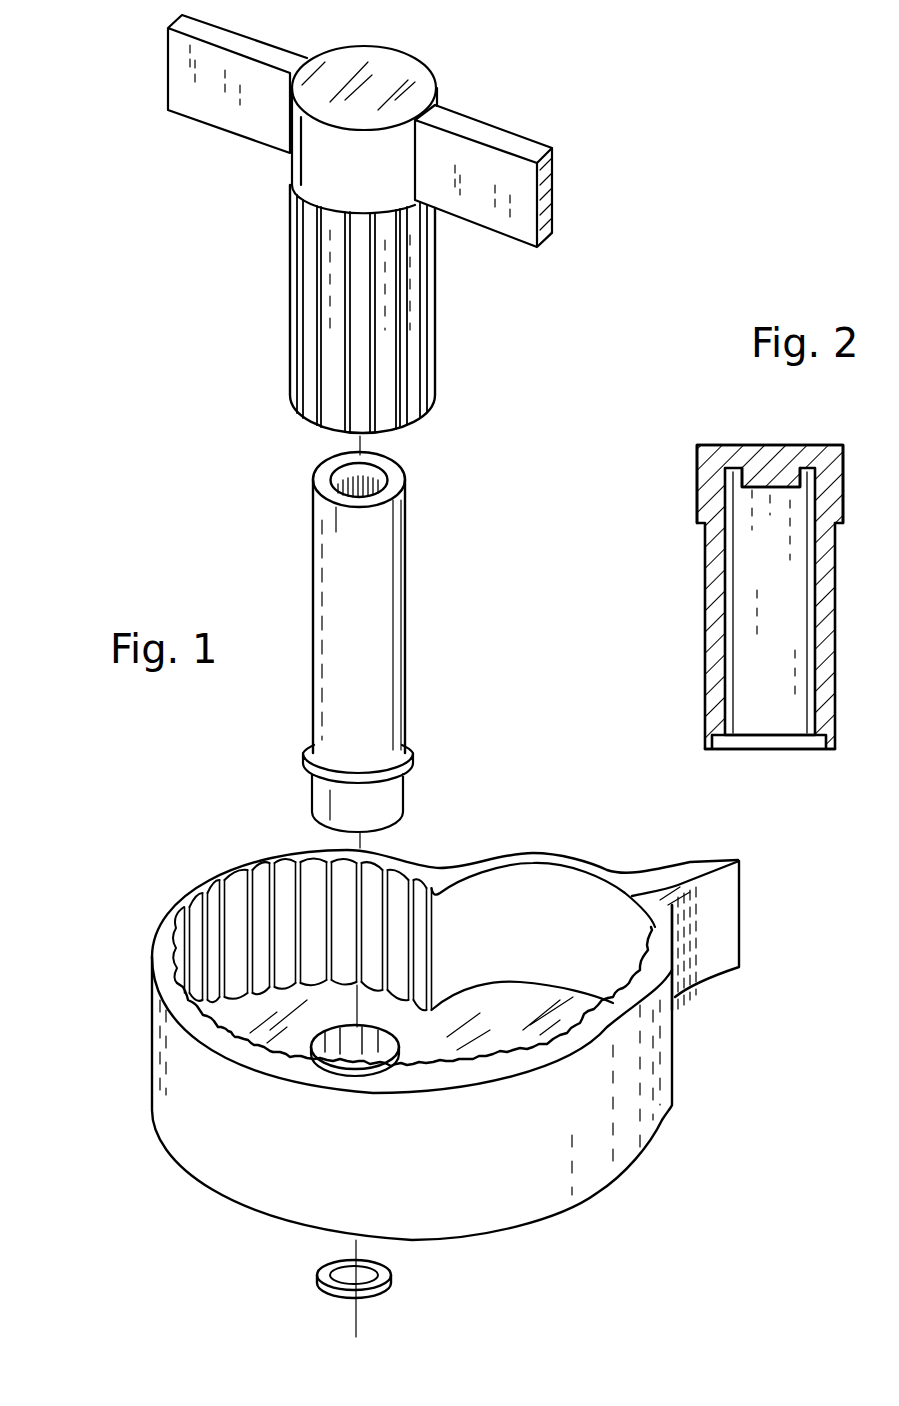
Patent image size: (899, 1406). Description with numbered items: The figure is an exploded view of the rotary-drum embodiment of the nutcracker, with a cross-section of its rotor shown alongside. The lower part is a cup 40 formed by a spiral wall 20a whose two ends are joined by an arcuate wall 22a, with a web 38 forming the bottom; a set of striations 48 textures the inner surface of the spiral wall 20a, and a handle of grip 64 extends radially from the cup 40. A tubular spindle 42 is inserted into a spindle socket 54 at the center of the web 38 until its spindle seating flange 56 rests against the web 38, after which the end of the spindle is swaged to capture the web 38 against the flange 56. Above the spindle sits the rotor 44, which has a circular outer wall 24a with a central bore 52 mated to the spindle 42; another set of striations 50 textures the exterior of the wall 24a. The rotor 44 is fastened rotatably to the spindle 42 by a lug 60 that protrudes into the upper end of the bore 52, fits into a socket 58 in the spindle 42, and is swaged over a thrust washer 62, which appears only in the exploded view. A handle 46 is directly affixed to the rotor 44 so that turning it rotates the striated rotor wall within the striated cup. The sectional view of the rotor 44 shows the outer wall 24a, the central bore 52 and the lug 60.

In FIG. 1, the spiral wall 20a is at (479, 993).
In FIG. 1, the arcuate wall 22a is at (615, 866).
In FIG. 1, the circular outer wall 24a is at (415, 327).
In FIG. 2, the circular outer wall 24a is at (709, 639).
In FIG. 1, the web 38 is at (523, 1010).
In FIG. 1, the cup 40 is at (607, 1130).
In FIG. 1, the tubular spindle 42 is at (416, 642).
In FIG. 1, the rotor 44 is at (417, 78).
In FIG. 2, the rotor 44 is at (697, 489).
In FIG. 1, the handle 46 is at (213, 95).
In FIG. 1, the striations 48 is at (283, 920).
In FIG. 1, the striations 50 is at (308, 313).
In FIG. 2, the central bore 52 is at (772, 724).
In FIG. 1, the spindle socket 54 is at (250, 1057).
In FIG. 1, the spindle seating flange 56 is at (413, 757).
In FIG. 1, the socket 58 is at (387, 472).
In FIG. 2, the lug 60 is at (761, 474).
In FIG. 1, the thrust washer 62 is at (393, 1275).
In FIG. 1, the handle of grip 64 is at (717, 948).